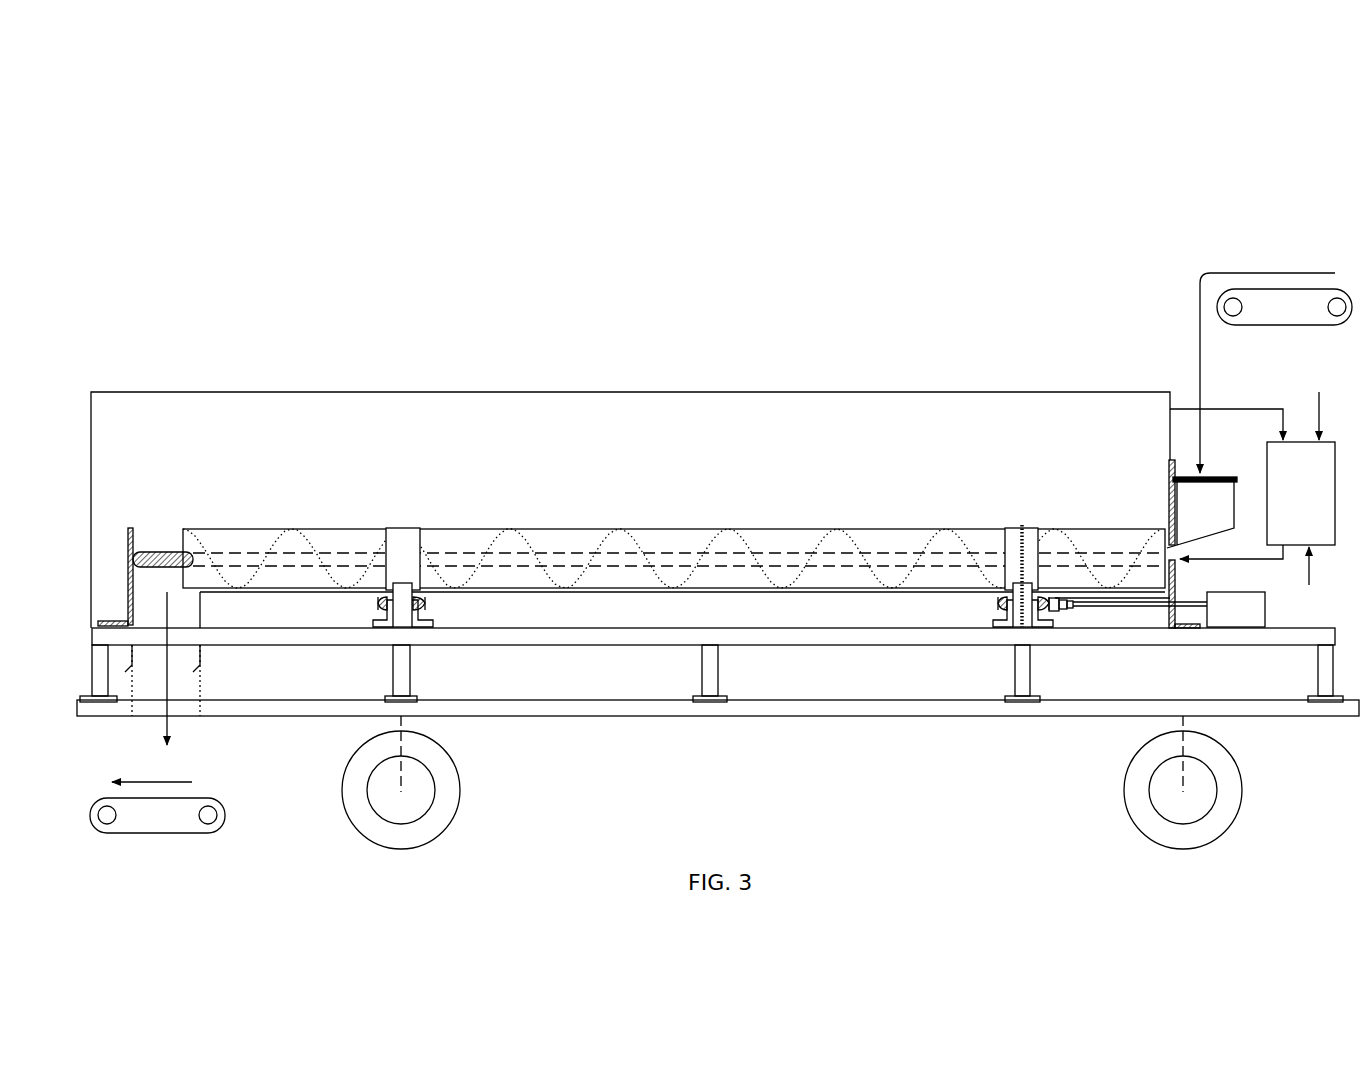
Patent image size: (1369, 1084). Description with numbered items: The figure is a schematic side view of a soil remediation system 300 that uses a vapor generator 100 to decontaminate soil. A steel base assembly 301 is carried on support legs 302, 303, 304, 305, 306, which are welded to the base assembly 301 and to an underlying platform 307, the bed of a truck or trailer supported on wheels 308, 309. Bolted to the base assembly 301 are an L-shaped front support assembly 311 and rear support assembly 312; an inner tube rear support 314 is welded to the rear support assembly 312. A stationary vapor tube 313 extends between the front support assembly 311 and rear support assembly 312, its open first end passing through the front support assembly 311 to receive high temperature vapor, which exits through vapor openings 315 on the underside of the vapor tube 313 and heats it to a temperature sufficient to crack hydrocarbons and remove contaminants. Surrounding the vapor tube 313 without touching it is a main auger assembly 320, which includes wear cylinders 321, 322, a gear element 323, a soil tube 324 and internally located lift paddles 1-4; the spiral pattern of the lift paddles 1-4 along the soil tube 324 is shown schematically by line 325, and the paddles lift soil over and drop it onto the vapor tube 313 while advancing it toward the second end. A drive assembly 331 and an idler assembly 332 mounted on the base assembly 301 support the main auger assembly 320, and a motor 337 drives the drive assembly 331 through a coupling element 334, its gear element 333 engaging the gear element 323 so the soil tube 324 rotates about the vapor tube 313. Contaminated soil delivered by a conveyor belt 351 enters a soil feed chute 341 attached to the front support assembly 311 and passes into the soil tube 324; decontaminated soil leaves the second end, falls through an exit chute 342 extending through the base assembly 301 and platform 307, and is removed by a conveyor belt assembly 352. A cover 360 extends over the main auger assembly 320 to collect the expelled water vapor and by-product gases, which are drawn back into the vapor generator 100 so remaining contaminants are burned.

The soil remediation system 300 is at (242, 272).
The cover 360 is at (512, 392).
The front support assembly 311 is at (1168, 463).
The main auger assembly 320 is at (460, 527).
The soil tube 324 is at (552, 528).
The vapor tube 313 is at (223, 552).
The spiral pattern line 325 is at (710, 540).
The vapor openings 315 is at (720, 568).
The lifting paddles 1-4 is at (854, 537).
The rear support assembly 312 is at (130, 527).
The inner tube rear support 314 is at (152, 551).
The wear cylinder 322 is at (402, 543).
The idler assembly 332 is at (427, 603).
The wear cylinder 321 is at (1013, 538).
The gear element 333 is at (1025, 627).
The gear element 323 is at (1023, 527).
The drive assembly 331 is at (998, 603).
The coupling element 334 is at (1068, 607).
The base assembly 301 is at (568, 638).
The support leg 302 is at (100, 680).
The support leg 303 is at (402, 670).
The support leg 304 is at (710, 670).
The support leg 305 is at (1022, 671).
The support leg 306 is at (1327, 672).
The platform 307 is at (620, 705).
The wheel 308 is at (443, 782).
The wheel 309 is at (1133, 782).
The exit chute 342 is at (202, 656).
The conveyor belt assembly 352 is at (176, 826).
The conveyor belt 351 is at (1302, 319).
The soil feed chute 341 is at (1222, 514).
The vapor generator 100 is at (1291, 512).
The motor 337 is at (1255, 621).